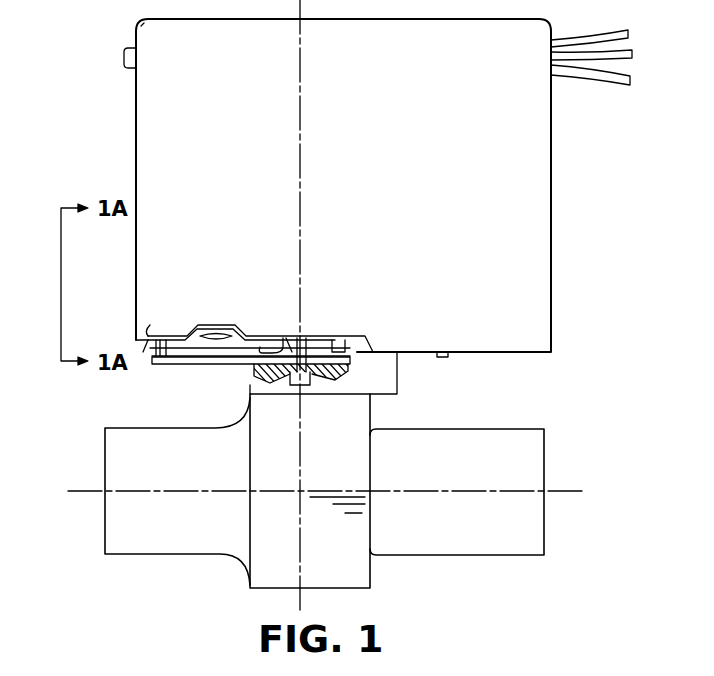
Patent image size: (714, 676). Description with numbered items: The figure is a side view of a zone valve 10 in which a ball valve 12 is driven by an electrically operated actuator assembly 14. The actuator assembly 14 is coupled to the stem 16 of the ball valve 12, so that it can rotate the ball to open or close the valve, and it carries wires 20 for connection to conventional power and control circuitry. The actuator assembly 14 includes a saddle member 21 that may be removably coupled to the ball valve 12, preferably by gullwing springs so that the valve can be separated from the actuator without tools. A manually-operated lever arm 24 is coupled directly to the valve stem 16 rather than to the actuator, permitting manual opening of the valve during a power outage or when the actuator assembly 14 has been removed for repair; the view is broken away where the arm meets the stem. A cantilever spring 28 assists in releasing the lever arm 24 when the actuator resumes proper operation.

The zone valve 10 is at (60, 97).
The ball valve 12 is at (496, 568).
The actuator assembly 14 is at (545, 316).
The stem 16 is at (305, 348).
The wires 20 is at (597, 37).
The saddle member 21 is at (392, 378).
The lever arm 24 is at (168, 364).
The cantilever spring 28 is at (283, 343).